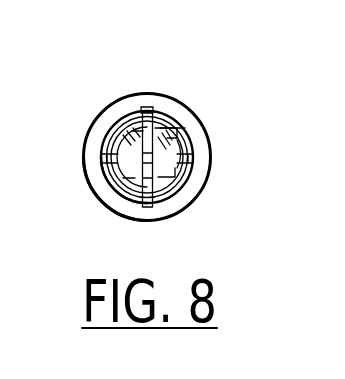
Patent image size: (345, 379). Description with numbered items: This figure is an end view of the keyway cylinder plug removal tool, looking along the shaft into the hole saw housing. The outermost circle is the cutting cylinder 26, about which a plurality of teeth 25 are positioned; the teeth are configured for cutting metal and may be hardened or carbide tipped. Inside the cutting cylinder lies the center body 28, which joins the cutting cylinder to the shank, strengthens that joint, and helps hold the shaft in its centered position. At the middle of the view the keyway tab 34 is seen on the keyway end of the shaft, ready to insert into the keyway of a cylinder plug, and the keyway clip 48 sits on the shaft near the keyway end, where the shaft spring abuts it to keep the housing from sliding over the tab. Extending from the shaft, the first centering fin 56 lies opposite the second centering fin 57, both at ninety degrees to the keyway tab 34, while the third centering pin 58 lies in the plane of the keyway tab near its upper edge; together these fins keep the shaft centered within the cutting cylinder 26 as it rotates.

The teeth 25 is at (109, 128).
The cutting cylinder 26 is at (105, 140).
The center body 28 is at (168, 100).
The keyway tab 34 is at (110, 196).
The keyway clip 48 is at (173, 187).
The first centering fin 56 is at (186, 156).
The second centering fin 57 is at (102, 159).
The third centering pin 58 is at (146, 107).